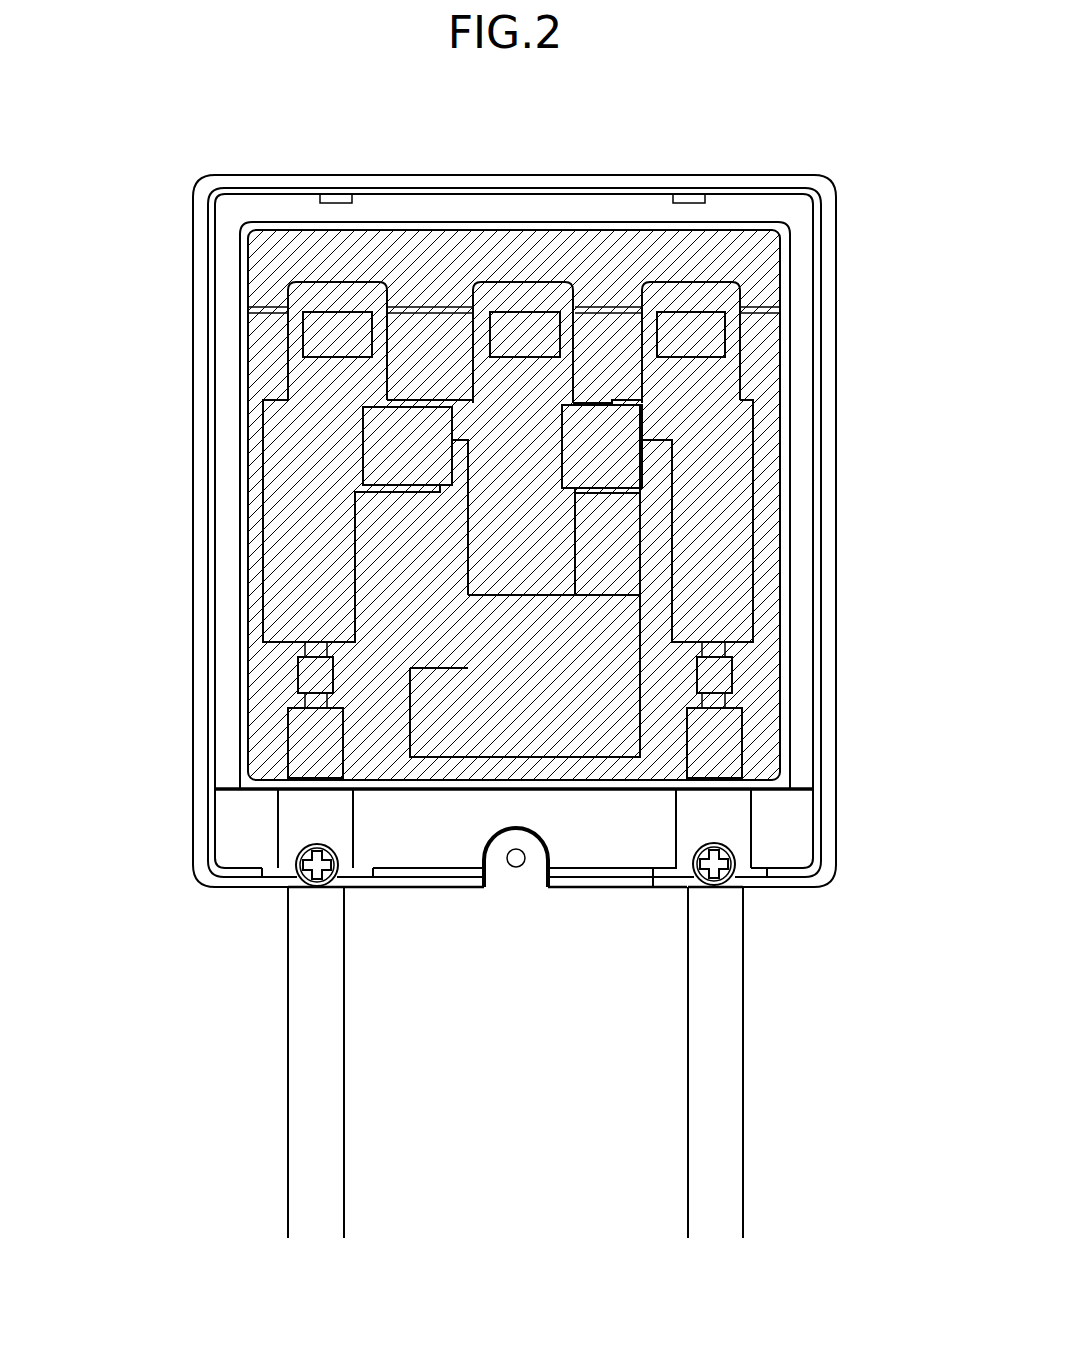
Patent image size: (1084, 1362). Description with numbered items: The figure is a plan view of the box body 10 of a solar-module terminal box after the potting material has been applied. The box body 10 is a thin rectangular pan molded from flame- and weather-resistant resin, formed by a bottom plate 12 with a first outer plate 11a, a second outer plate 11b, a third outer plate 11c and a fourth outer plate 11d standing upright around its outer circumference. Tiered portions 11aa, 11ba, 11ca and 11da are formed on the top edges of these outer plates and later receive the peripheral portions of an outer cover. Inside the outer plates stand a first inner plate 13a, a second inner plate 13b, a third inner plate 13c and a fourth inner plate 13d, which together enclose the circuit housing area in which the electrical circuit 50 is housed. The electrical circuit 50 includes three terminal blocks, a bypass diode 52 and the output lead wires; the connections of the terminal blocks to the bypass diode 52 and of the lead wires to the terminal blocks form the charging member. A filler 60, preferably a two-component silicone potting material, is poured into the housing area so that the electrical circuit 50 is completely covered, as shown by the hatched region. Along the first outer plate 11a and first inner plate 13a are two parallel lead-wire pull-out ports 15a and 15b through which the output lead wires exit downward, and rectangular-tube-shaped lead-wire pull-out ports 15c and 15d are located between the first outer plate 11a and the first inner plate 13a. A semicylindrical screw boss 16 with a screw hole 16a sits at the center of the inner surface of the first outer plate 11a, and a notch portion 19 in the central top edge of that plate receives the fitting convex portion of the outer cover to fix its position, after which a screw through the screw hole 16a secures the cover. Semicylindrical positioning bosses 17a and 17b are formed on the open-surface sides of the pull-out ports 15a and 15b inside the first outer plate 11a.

The box body 10 is at (858, 249).
The first outer plate 11a is at (590, 883).
The tiered portion 11aa is at (620, 872).
The second outer plate 11b is at (503, 175).
The tiered portion 11ba is at (411, 190).
The third outer plate 11c is at (838, 460).
The tiered portion 11ca is at (818, 417).
The fourth outer plate 11d is at (193, 493).
The tiered portion 11da is at (208, 397).
The bottom plate 12 is at (220, 698).
The first inner plate 13a is at (431, 792).
The second inner plate 13b is at (280, 222).
The third inner plate 13c is at (792, 660).
The fourth inner plate 13d is at (238, 332).
The lead-wire pull-out port 15a is at (346, 892).
The lead-wire pull-out port 15b is at (744, 892).
The lead-wire pull-out port 15c is at (297, 825).
The lead-wire pull-out port 15d is at (740, 830).
The screw boss 16 is at (557, 838).
The screw hole 16a is at (516, 858).
The positioning boss 17a is at (335, 843).
The positioning boss 17b is at (670, 845).
The notch portion 19 is at (498, 878).
The electrical circuit 50 is at (753, 393).
The bypass diode 52 is at (600, 693).
The filler 60 is at (602, 248).